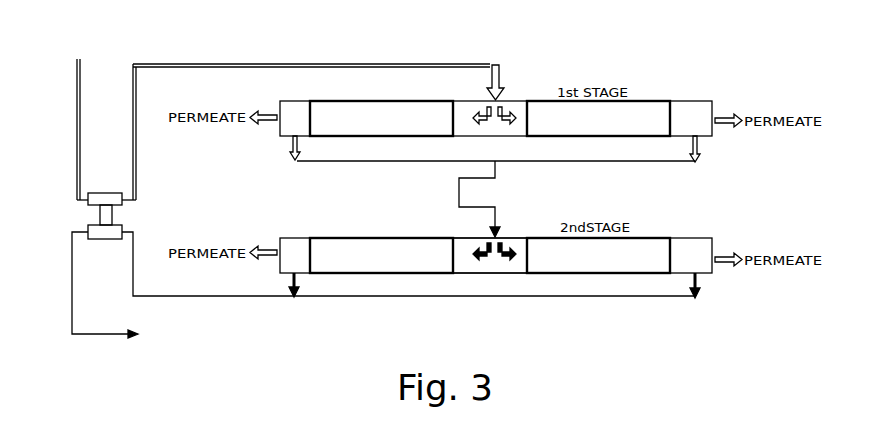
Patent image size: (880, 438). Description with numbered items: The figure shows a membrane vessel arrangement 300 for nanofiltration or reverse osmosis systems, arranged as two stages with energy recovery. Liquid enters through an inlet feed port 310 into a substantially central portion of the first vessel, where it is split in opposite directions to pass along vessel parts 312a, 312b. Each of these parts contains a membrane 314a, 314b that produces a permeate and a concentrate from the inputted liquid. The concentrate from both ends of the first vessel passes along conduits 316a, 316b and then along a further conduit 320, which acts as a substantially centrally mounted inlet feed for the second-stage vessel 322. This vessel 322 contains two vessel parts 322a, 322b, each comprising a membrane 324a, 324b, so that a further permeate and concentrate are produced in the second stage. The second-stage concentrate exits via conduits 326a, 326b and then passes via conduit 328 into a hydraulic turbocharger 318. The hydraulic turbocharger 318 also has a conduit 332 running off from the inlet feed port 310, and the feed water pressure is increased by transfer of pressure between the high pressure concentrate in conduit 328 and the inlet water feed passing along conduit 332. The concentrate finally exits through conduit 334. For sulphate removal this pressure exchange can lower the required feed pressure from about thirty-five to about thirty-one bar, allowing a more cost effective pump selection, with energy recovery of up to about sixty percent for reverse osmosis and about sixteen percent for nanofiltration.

The membrane vessel arrangement 300 is at (573, 54).
The inlet feed port 310 is at (491, 63).
The vessel part 312a is at (418, 101).
The vessel part 312b is at (647, 102).
The membrane 314a is at (381, 118).
The membrane 314b is at (598, 118).
The conduit 316a is at (291, 147).
The conduit 316b is at (699, 148).
The hydraulic turbocharger 318 is at (100, 214).
The further conduit 320 is at (457, 195).
The vessel 322 is at (510, 237).
The vessel part 322a is at (420, 274).
The vessel part 322b is at (565, 274).
The membrane 324a is at (381, 255).
The membrane 324b is at (598, 255).
The conduit 326a is at (298, 282).
The conduit 326b is at (700, 282).
The conduit 328 is at (222, 297).
The conduit 332 is at (296, 65).
The conduit 334 is at (100, 335).